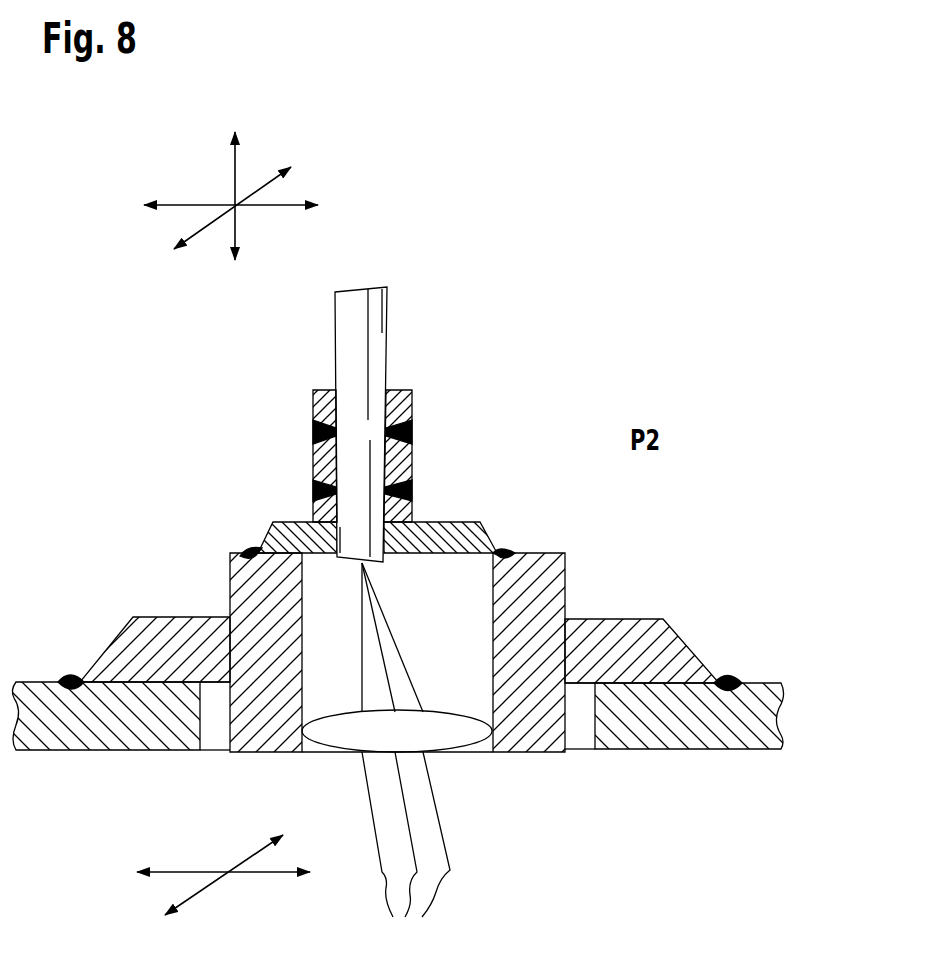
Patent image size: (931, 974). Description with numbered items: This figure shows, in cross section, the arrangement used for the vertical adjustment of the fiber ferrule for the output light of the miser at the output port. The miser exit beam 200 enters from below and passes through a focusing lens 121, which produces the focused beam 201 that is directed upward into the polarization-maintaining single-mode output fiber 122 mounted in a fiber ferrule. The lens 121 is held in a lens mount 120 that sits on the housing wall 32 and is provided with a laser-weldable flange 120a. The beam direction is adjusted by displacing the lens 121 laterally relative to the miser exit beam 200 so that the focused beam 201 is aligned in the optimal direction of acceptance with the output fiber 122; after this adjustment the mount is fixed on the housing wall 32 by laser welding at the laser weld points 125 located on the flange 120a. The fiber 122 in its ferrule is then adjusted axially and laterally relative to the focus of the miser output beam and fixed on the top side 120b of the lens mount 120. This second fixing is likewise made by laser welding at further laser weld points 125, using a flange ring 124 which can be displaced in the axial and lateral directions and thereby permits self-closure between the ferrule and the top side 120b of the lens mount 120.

The housing wall 32 is at (668, 740).
The lens mount 120 is at (537, 753).
The laser-weldable flange 120a is at (627, 623).
The top side of the lens mount 120b is at (543, 560).
The focusing lens 121 is at (353, 728).
The polarization-maintaining single-mode output fiber 122 is at (377, 342).
The flange ring 124 is at (430, 518).
The laser weld points 125 is at (312, 433).
The miser exit beam 200 is at (406, 853).
The focused beam 201 is at (372, 606).